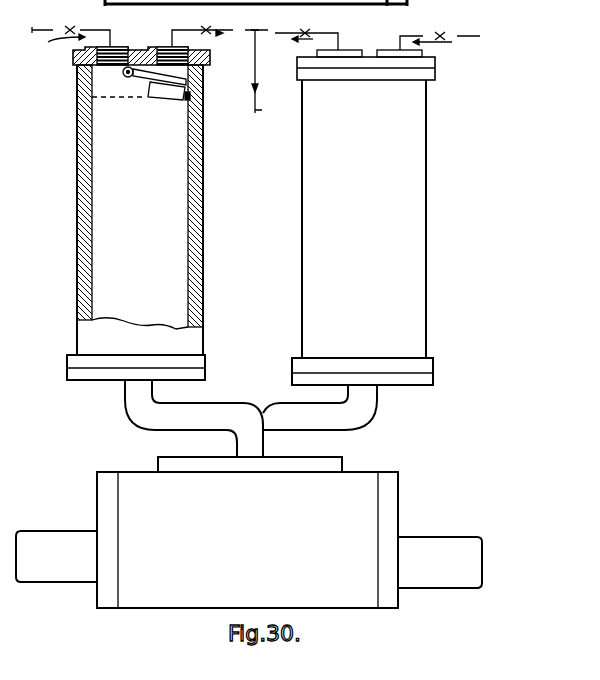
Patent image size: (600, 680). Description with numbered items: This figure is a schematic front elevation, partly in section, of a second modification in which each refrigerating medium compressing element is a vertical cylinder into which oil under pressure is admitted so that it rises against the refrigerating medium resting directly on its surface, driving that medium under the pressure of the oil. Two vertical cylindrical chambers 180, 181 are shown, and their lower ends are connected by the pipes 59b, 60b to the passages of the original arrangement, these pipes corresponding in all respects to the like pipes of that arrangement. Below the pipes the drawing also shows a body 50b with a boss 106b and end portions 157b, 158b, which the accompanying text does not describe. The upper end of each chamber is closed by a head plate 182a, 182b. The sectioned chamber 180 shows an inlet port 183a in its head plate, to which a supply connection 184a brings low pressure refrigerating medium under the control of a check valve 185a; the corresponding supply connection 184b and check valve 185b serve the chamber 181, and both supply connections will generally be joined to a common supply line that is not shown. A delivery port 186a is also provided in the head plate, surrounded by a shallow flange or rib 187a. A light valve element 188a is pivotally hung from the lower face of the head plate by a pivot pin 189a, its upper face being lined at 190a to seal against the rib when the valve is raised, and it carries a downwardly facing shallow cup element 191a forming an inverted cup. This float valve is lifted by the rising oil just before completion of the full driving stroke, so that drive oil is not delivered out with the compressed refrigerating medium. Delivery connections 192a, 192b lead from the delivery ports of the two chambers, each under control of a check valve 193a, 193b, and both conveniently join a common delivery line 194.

The vertical cylindrical chamber 180 is at (205, 195).
The vertical cylindrical chamber 181 is at (428, 193).
The head plate 182a is at (100, 68).
The head plate 182b is at (365, 66).
The inlet port 183a is at (87, 140).
The supply connection 184a is at (37, 31).
The supply connection 184b is at (458, 42).
The check valve 185a is at (68, 58).
The check valve 185b is at (490, 72).
The delivery port 186a is at (167, 62).
The shallow flange or rib 187a is at (166, 36).
The valve element 188a is at (244, 113).
The pivot pin 189a is at (127, 78).
The lining 190a is at (244, 89).
The shallow cup element 191a is at (157, 98).
The delivery connection 192a is at (238, 14).
The delivery connection 192b is at (293, 14).
The check valve 193a is at (242, 33).
The check valve 193b is at (294, 54).
The common delivery line 194 is at (271, 76).
The pipe 59b is at (166, 420).
The pipe 60b is at (353, 420).
The manifold boss 106b is at (300, 468).
The pump housing 50b is at (337, 527).
The shaft end 157b is at (456, 568).
The shaft end 158b is at (74, 558).